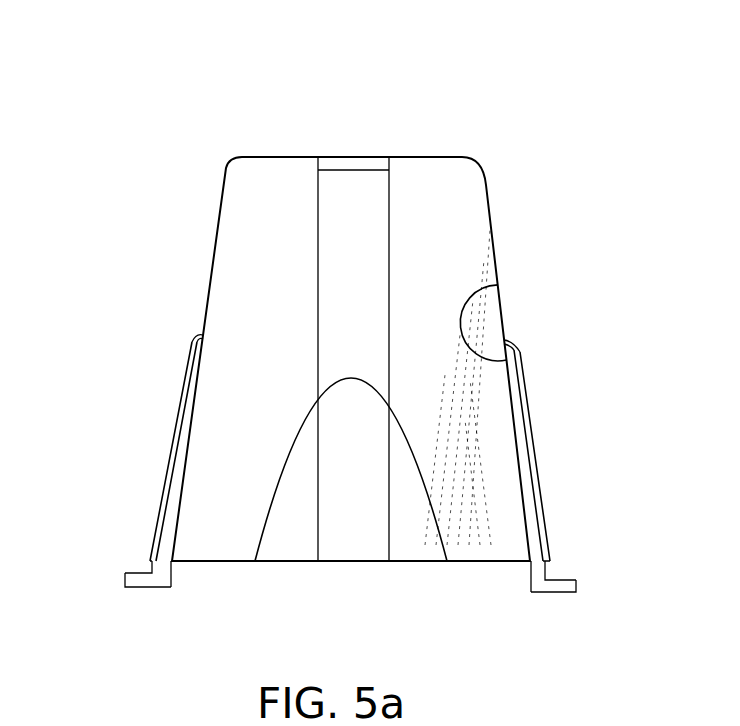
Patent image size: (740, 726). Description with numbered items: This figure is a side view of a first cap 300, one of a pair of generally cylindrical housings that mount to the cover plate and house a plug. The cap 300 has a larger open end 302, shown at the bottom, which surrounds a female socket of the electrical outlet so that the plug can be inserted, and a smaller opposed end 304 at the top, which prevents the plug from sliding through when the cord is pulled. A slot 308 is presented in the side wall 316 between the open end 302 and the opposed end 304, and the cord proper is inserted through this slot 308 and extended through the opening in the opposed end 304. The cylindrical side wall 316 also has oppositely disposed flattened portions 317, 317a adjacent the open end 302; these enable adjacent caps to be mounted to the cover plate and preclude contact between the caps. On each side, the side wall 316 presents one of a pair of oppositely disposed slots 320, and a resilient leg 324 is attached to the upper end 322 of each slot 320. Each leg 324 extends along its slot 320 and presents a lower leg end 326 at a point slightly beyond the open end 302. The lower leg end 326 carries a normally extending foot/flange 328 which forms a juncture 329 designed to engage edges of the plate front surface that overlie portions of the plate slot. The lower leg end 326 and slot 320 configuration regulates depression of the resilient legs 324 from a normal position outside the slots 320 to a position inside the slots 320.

The cap 300 is at (170, 88).
The open end 302 is at (283, 561).
The opposed end 304 is at (368, 160).
The slot 308 is at (353, 480).
The side wall 316 is at (253, 187).
The flattened portion 317 is at (290, 512).
The flattened portion 317a is at (352, 390).
The slot 320 is at (480, 295).
The upper end 322 is at (203, 335).
The resilient leg 324 is at (180, 405).
The lower leg end 326 is at (165, 566).
The foot/flange 328 is at (135, 590).
The juncture 329 is at (147, 570).